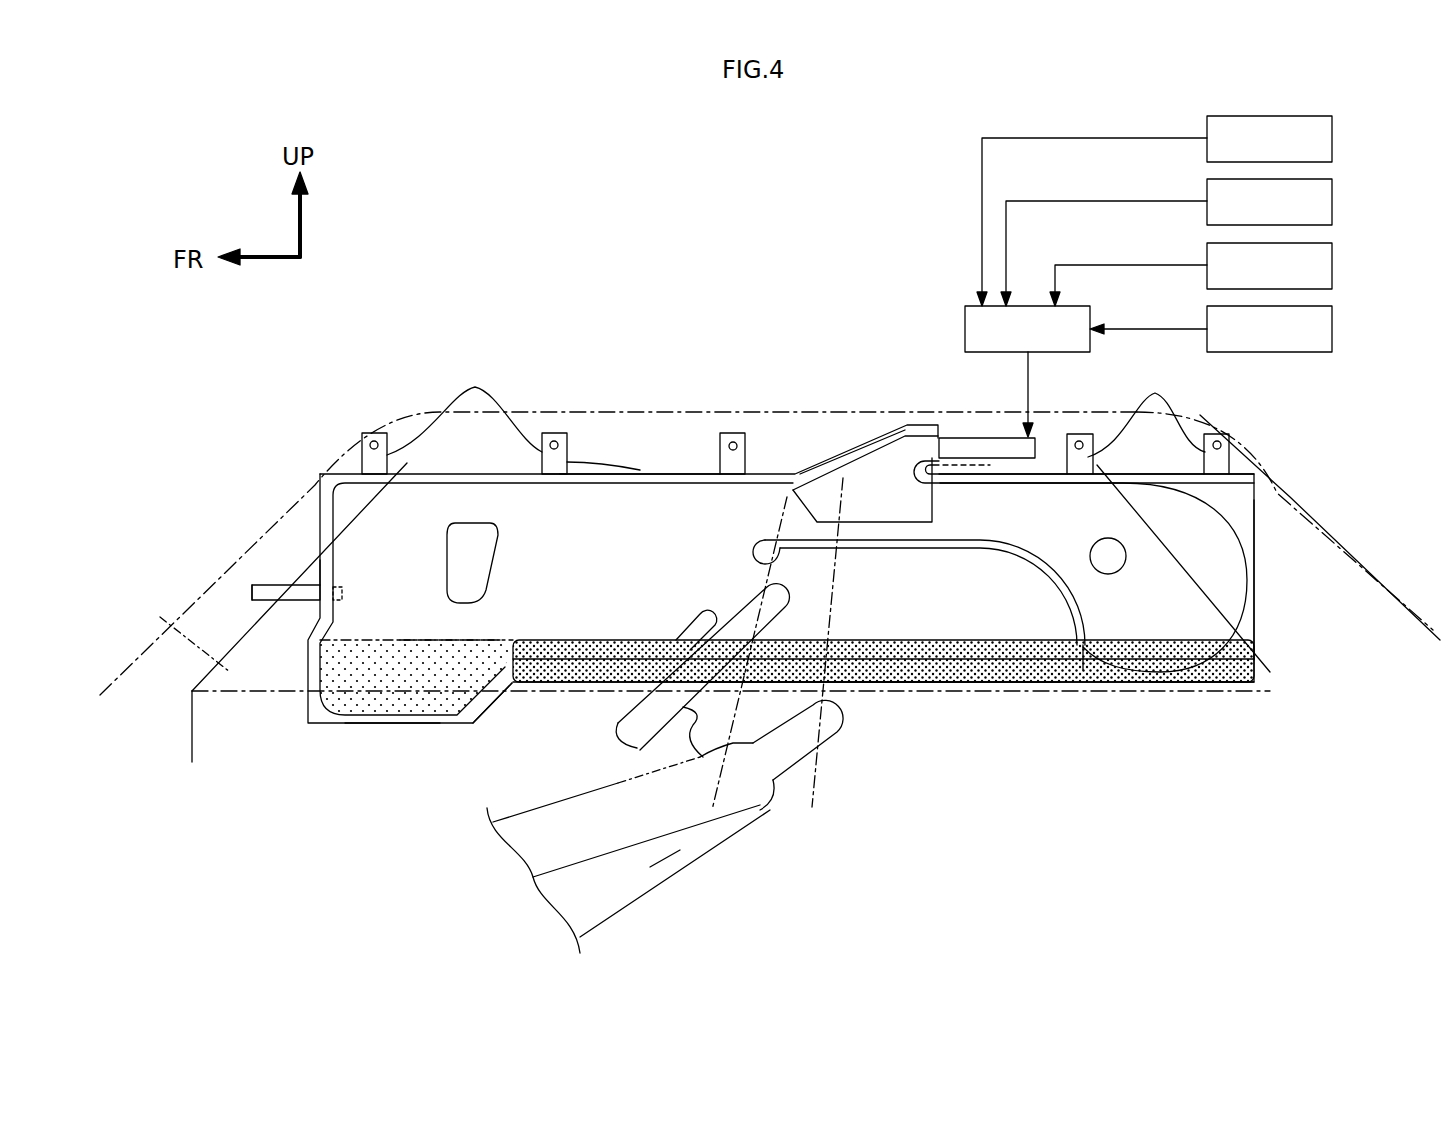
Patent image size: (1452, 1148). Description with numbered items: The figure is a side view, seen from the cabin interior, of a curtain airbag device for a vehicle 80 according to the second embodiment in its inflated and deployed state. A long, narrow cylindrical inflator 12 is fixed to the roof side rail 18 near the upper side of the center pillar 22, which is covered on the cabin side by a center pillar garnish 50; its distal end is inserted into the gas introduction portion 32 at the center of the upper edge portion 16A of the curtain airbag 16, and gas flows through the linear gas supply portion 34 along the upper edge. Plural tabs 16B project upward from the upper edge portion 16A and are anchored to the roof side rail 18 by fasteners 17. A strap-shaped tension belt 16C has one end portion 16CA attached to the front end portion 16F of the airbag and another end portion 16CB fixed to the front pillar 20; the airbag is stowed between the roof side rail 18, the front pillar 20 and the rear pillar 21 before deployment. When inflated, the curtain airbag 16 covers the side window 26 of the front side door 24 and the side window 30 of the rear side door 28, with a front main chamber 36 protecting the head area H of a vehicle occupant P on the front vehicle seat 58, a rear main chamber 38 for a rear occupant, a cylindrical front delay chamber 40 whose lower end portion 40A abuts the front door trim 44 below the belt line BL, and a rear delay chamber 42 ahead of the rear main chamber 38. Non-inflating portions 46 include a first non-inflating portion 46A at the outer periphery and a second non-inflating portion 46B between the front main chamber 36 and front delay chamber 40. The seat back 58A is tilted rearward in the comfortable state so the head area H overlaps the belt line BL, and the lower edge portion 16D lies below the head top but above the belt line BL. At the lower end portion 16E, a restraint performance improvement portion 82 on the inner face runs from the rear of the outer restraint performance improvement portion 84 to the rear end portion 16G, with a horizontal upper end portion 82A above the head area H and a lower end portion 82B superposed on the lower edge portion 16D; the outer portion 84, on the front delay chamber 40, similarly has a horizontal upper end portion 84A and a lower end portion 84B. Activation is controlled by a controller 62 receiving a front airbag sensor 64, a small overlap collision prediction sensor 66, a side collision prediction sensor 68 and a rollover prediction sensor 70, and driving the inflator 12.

The inflator 12 is at (980, 437).
The curtain airbag 16 is at (1092, 694).
The upper edge portion 16A is at (631, 472).
The tabs 16B is at (748, 370).
The tension belt 16C is at (300, 597).
The one end portion 16CA is at (340, 586).
The another end portion 16CB is at (258, 592).
The lower edge portion 16D is at (1023, 683).
The lower end portion 16E is at (1227, 683).
The front end portion 16F is at (320, 575).
The rear end portion 16G is at (1256, 580).
The fasteners 17 is at (372, 443).
The roof side rail 18 is at (703, 438).
The front pillar 20 is at (285, 500).
The rear pillar 21 is at (1290, 503).
The center pillar 22 is at (838, 604).
The side door 24 is at (218, 678).
The side window 26 is at (240, 660).
The side door 28 is at (1277, 670).
The side window 30 is at (1272, 676).
The gas introduction portion 32 is at (905, 427).
The gas supply portion 34 is at (800, 478).
The front main chamber 36 is at (553, 565).
The rear main chamber 38 is at (1110, 604).
The front delay chamber 40 is at (367, 565).
The lower end portion 40A is at (437, 724).
The rear delay chamber 42 is at (965, 616).
The front door trim 44 is at (240, 713).
The non-inflating portions 46 is at (1268, 543).
The first non-inflating portion 46A is at (1250, 537).
The second non-inflating portion 46B is at (492, 545).
The center pillar garnish 50 is at (767, 587).
The front vehicle seat 58 is at (665, 768).
The seat back 58A is at (680, 855).
The controller 62 is at (963, 332).
The front airbag sensor 64 is at (1332, 135).
The small overlap collision prediction sensor 66 is at (1332, 199).
The side collision prediction sensor 68 is at (1332, 263).
The rollover prediction sensor 70 is at (1332, 327).
The curtain airbag device for a vehicle 80 is at (540, 318).
The restraint performance improvement portion 82 is at (970, 684).
The upper end portion 82A is at (587, 630).
The lower end portion 82B is at (893, 684).
The restraint performance improvement portion 84 is at (322, 713).
The upper end portion 84A is at (430, 640).
The lower end portion 84B is at (390, 724).
The head area H is at (797, 715).
The belt line BL is at (627, 690).
The vehicle occupant P is at (540, 800).